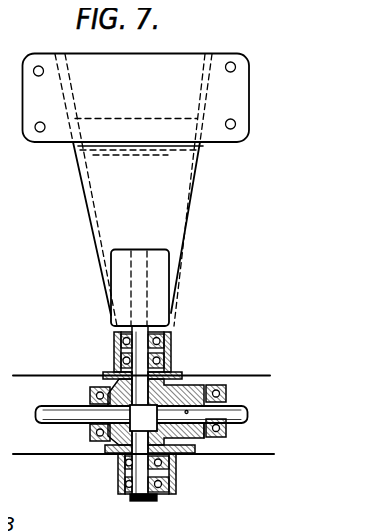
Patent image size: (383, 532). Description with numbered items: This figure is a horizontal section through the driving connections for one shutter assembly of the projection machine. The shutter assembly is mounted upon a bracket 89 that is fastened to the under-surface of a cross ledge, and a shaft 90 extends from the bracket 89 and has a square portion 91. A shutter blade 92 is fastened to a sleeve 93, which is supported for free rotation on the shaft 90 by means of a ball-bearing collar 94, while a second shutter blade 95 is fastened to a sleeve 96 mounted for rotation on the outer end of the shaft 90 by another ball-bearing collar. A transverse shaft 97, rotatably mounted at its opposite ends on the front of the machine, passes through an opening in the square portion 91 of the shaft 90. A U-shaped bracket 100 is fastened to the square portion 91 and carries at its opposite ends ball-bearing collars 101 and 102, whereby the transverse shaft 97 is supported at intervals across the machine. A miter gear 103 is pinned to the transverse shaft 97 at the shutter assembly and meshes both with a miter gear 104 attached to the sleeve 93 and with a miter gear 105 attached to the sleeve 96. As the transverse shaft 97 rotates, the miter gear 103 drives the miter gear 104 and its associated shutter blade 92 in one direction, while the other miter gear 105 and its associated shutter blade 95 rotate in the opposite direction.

The bracket 89 is at (89, 190).
The shaft 90 is at (141, 352).
The square portion 91 is at (110, 451).
The shutter blade 92 is at (233, 366).
The sleeve 93 is at (164, 325).
The ball-bearing collar 94 is at (106, 325).
The shutter blade 95 is at (226, 447).
The sleeve 96 is at (110, 473).
The transverse shaft 97 is at (229, 398).
The U-shaped bracket 100 is at (190, 430).
The ball-bearing collar 101 is at (82, 386).
The ball-bearing collar 102 is at (218, 421).
The miter gear 103 is at (182, 386).
The miter gear 104 is at (110, 366).
The miter gear 105 is at (97, 434).